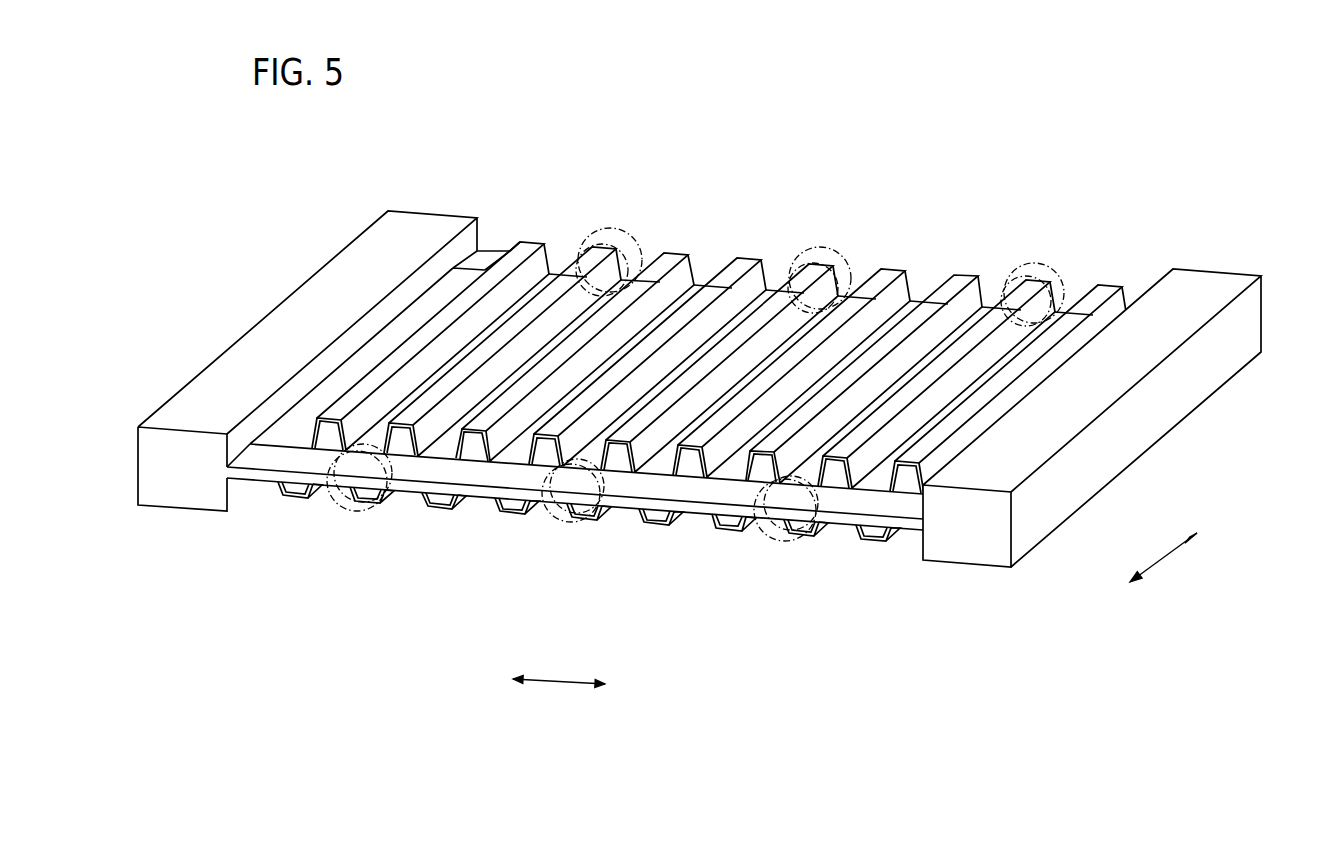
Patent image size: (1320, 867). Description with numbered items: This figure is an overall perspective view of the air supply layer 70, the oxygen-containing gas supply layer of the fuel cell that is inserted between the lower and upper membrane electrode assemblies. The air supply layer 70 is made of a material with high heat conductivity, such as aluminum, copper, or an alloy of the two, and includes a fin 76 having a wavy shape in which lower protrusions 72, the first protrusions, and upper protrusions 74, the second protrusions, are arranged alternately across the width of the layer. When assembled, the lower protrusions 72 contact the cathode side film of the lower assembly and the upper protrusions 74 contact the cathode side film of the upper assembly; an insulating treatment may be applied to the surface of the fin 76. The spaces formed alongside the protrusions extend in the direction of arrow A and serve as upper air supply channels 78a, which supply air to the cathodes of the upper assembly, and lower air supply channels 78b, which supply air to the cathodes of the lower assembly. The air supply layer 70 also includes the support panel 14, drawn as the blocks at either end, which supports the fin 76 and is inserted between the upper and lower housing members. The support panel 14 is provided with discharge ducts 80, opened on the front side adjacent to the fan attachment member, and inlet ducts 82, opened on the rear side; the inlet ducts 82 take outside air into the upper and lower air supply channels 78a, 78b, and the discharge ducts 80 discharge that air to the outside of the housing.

The air supply layer 70 is at (1164, 119).
The support panel 14 is at (1113, 453).
The fin 76 is at (992, 412).
The upper protrusions 74 is at (766, 336).
The upper air supply channels 78a is at (574, 303).
The lower air supply channels 78b is at (688, 515).
The lower protrusions 72 is at (294, 497).
The discharge ducts 80 is at (343, 510).
The inlet ducts 82 is at (625, 228).